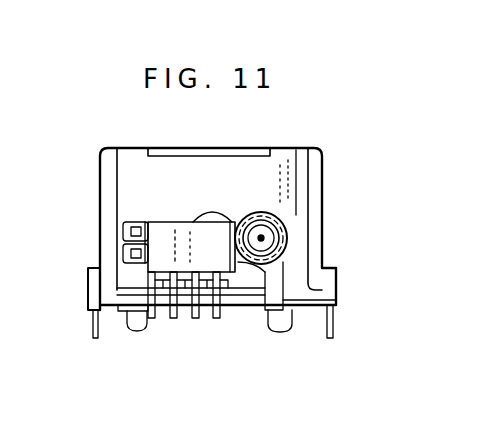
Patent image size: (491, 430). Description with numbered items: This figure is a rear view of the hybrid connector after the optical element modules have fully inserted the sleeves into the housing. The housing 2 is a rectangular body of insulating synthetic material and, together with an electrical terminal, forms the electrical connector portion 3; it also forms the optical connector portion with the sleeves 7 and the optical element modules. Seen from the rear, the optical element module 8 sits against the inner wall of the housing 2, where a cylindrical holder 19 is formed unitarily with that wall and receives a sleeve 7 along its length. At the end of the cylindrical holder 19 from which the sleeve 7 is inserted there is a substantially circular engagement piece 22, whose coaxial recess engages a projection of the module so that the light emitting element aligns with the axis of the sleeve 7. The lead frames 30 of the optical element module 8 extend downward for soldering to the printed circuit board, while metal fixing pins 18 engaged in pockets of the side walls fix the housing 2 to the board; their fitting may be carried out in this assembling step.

The housing 2 is at (133, 160).
The electrical connector portion 3 is at (130, 268).
The sleeve 7 is at (264, 241).
The optical element module 8 is at (168, 225).
The fixing pin 18 is at (93, 322).
The cylindrical holder 19 is at (205, 212).
The engagement piece 22 is at (285, 226).
The lead frame 30 is at (172, 319).